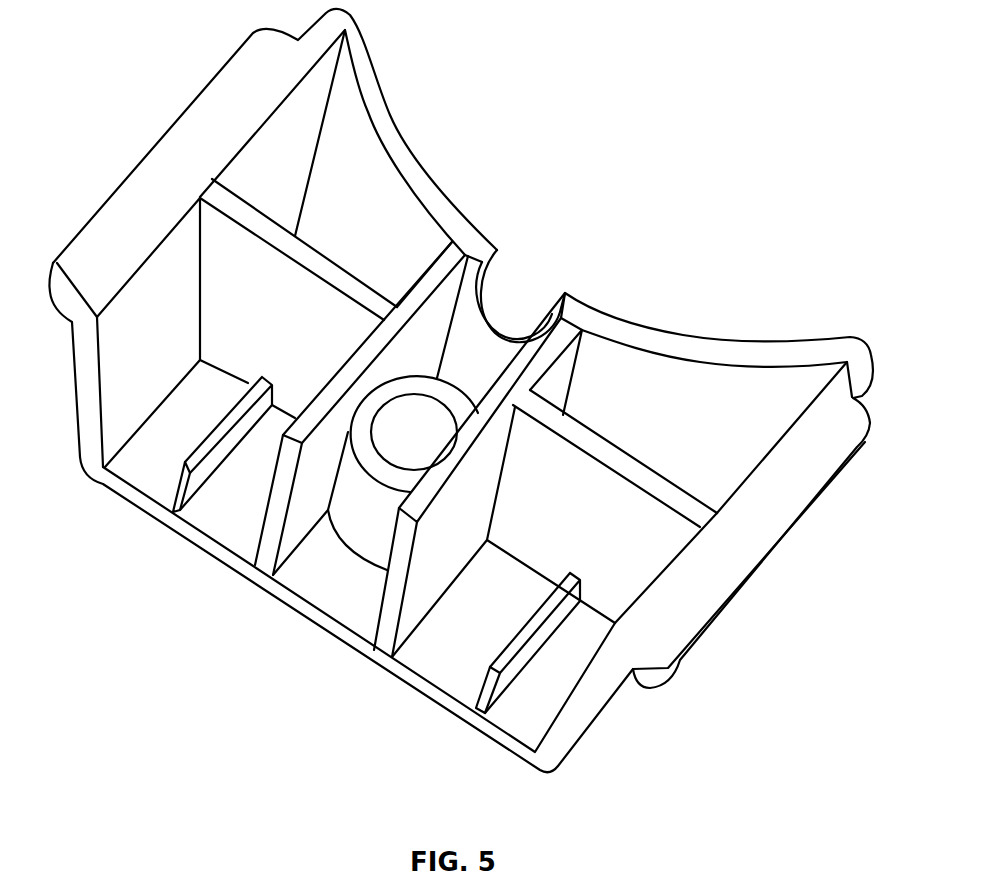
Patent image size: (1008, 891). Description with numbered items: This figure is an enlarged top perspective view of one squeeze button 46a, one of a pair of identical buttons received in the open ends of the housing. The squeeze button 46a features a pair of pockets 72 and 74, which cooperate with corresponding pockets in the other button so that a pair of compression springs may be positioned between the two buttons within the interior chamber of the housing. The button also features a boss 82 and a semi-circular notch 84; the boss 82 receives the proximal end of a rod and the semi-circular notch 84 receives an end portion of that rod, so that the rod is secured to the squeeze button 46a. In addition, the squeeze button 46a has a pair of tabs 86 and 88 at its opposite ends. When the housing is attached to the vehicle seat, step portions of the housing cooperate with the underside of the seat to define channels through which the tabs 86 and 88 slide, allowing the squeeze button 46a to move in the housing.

The squeeze button 46a is at (650, 118).
The pocket 72 is at (314, 308).
The pocket 74 is at (614, 492).
The boss 82 is at (365, 538).
The semi-circular notch 84 is at (496, 285).
The tab 86 is at (762, 565).
The tab 88 is at (168, 137).